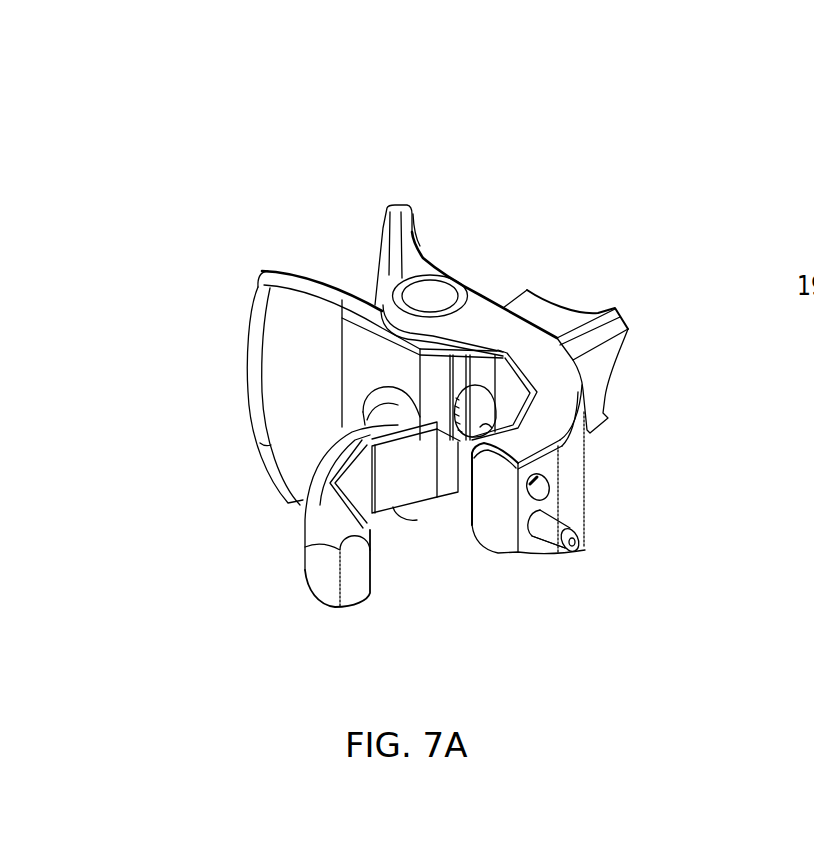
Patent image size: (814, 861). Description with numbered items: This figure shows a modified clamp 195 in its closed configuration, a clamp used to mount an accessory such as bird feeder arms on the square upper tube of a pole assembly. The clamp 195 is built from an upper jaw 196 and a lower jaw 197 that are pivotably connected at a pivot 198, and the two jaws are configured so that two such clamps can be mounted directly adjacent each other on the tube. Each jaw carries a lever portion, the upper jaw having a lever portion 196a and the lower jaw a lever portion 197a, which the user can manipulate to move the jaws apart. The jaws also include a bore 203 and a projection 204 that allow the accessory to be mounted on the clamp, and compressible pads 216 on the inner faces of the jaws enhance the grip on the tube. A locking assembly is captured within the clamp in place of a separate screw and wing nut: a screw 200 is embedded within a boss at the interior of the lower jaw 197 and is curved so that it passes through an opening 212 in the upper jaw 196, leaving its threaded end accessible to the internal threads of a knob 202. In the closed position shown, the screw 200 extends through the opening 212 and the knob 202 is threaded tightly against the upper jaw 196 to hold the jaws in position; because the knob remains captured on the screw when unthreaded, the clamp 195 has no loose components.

The modified clamp 195 is at (392, 160).
The upper jaw 196 is at (586, 460).
The lever portion 196a is at (415, 257).
The lower jaw 197 is at (303, 550).
The lever portion 197a is at (296, 352).
The pivot 198 is at (432, 293).
The screw 200 is at (473, 412).
The knob 202 is at (567, 313).
The bore 203 is at (543, 488).
The projection 204 is at (576, 543).
The opening 212 is at (476, 383).
The compressible pads 216 is at (385, 485).